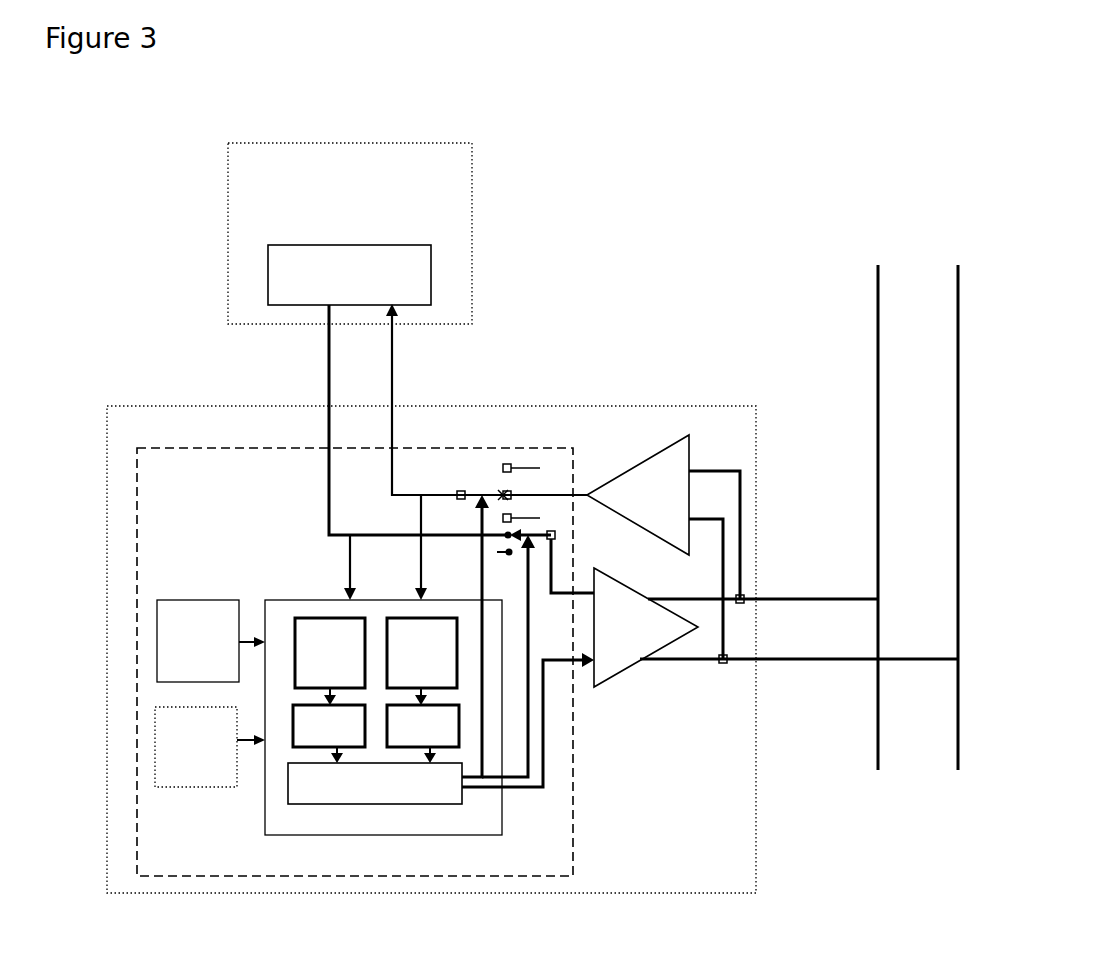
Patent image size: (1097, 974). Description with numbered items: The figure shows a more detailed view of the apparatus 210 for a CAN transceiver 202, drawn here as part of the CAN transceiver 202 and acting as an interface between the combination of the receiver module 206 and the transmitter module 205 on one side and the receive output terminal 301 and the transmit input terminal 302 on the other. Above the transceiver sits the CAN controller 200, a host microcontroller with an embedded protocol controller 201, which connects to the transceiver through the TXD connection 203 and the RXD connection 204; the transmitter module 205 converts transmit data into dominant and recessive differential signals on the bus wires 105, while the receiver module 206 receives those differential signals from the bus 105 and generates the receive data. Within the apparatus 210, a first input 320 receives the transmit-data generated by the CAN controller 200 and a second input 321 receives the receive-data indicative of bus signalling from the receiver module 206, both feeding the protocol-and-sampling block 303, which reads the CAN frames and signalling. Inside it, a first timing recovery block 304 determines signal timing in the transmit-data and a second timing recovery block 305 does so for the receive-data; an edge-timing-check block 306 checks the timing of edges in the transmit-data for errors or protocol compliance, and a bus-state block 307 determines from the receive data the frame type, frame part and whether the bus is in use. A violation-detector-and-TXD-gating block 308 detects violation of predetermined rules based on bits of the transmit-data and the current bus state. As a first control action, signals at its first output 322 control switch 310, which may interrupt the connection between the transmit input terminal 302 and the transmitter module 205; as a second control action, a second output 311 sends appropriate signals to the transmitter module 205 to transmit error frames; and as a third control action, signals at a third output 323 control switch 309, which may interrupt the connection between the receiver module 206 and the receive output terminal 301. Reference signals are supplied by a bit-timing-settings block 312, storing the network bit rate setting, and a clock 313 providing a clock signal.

The CAN bus 105 is at (848, 264).
The CAN controller 200 is at (240, 196).
The protocol controller 201 is at (408, 268).
The CAN transceiver 202 is at (137, 399).
The TXD interface connection 203 is at (329, 352).
The RXD interface connection 204 is at (392, 355).
The transmitter module 205 is at (776, 627).
The receiver module 206 is at (663, 547).
The apparatus 210 is at (477, 876).
The receive output terminal 301 is at (392, 401).
The transmit input terminal 302 is at (327, 400).
The protocol-and-sampling block 303 is at (315, 602).
The first timing recovery block 304 is at (330, 661).
The second timing recovery block 305 is at (422, 661).
The edge-timing-check block 306 is at (329, 734).
The bus-state block 307 is at (423, 734).
The violation-detector-and-TXD-gating block 308 is at (375, 783).
The switch 309 is at (492, 455).
The switch 310 is at (575, 540).
The second output 311 is at (545, 757).
The bit-timing-settings block 312 is at (211, 641).
The clock 313 is at (210, 747).
The first input 320 is at (347, 577).
The second input 321 is at (420, 577).
The first output 322 is at (532, 702).
The third output 323 is at (480, 585).